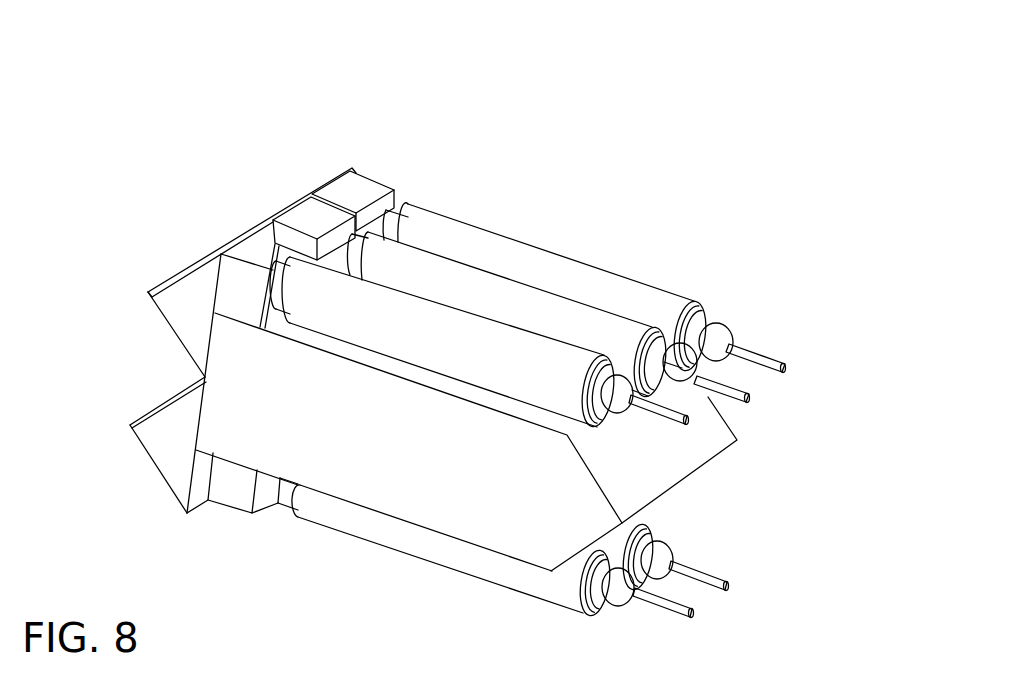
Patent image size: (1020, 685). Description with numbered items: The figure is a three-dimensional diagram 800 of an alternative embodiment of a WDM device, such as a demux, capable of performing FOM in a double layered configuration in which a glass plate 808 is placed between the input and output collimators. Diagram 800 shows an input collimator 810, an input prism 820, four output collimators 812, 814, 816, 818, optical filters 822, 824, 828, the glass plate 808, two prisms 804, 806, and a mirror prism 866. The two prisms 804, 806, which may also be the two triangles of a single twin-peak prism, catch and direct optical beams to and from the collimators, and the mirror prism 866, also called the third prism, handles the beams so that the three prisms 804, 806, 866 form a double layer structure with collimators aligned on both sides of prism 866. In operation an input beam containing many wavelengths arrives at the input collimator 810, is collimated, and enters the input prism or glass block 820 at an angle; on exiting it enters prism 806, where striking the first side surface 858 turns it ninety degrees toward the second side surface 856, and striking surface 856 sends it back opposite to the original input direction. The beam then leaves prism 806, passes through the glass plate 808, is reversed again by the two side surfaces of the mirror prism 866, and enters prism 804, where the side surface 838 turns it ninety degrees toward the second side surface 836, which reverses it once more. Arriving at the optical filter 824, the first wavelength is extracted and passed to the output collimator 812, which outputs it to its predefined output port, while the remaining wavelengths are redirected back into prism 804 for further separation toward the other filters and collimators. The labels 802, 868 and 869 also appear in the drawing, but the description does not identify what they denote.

The diagram 800 is at (209, 68).
The frame 802 is at (213, 322).
The prism 804 is at (182, 438).
The prism 806 is at (213, 308).
The glass plate 808 is at (424, 459).
The input collimator 810 is at (447, 348).
The output collimator 812 is at (422, 550).
The output collimator 814 is at (514, 308).
The output collimator 816 is at (648, 526).
The output collimator 818 is at (549, 273).
The input prism 820 is at (250, 232).
The optical filter 822 is at (328, 222).
The optical filter 824 is at (247, 491).
The optical filter 828 is at (367, 198).
The second side surface 836 is at (147, 460).
The side surface 838 is at (157, 394).
The second side surface 856 is at (170, 332).
The first side surface 858 is at (200, 262).
The mirror prism 866 is at (758, 471).
The second end plate 868 is at (736, 436).
The pulley 869 is at (583, 552).